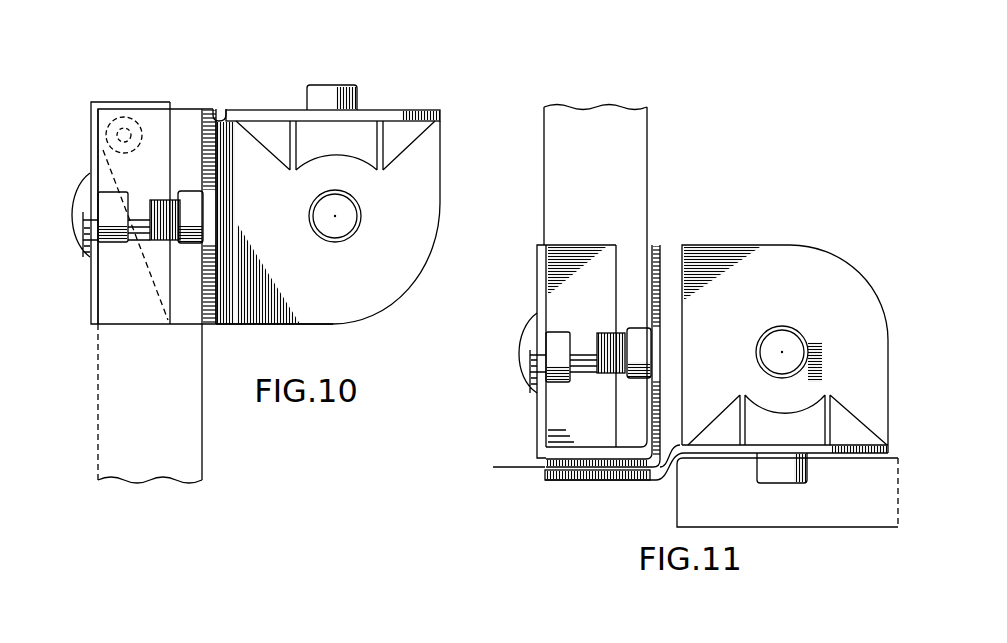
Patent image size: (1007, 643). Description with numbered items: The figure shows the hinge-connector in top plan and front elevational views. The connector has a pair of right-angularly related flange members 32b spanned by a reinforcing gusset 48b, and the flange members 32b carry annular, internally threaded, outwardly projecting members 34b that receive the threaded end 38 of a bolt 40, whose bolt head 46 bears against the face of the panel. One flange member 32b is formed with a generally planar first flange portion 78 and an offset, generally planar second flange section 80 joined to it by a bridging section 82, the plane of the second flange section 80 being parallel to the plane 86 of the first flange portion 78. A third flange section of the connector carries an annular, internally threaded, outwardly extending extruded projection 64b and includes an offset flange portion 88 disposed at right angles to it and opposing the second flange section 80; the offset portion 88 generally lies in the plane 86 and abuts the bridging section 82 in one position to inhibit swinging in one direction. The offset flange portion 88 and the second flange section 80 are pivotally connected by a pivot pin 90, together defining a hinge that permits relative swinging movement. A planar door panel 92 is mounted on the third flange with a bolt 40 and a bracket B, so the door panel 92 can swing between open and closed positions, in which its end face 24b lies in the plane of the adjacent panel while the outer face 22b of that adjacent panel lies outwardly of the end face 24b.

In FIG. 11, the outer face of adjacent panel 22b is at (783, 529).
In FIG. 11, the end face of panel 24b is at (674, 489).
In FIG. 10, the flange members 32b is at (447, 190).
In FIG. 11, the flange members 32b is at (846, 459).
In FIG. 10, the internally threaded outwardly projecting members 34b is at (315, 100).
In FIG. 11, the internally threaded outwardly projecting members 34b is at (794, 326).
In FIG. 11, the threaded end 38 is at (604, 332).
In FIG. 10, the bolt 40 is at (128, 242).
In FIG. 11, the bolt 40 is at (582, 336).
In FIG. 10, the bolt head 46 is at (83, 246).
In FIG. 11, the bolt head 46 is at (522, 362).
In FIG. 10, the gusset 48b is at (388, 132).
In FIG. 11, the gusset 48b is at (732, 408).
In FIG. 10, the extruded projection 64b is at (190, 194).
In FIG. 11, the extruded projection 64b is at (640, 380).
In FIG. 11, the first flange portion 78 is at (736, 455).
In FIG. 11, the second flange section 80 is at (605, 481).
In FIG. 11, the bridging section 82 is at (675, 438).
In FIG. 11, the plane of the flange portion 86 is at (500, 467).
In FIG. 11, the offset flange portion 88 is at (598, 460).
In FIG. 10, the pivot pin 90 is at (124, 135).
In FIG. 11, the pivot pin 90 is at (560, 482).
In FIG. 10, the door panel 92 is at (205, 456).
In FIG. 11, the door panel 92 is at (647, 185).
In FIG. 10, the bracket B is at (84, 151).
In FIG. 11, the bracket B is at (530, 419).